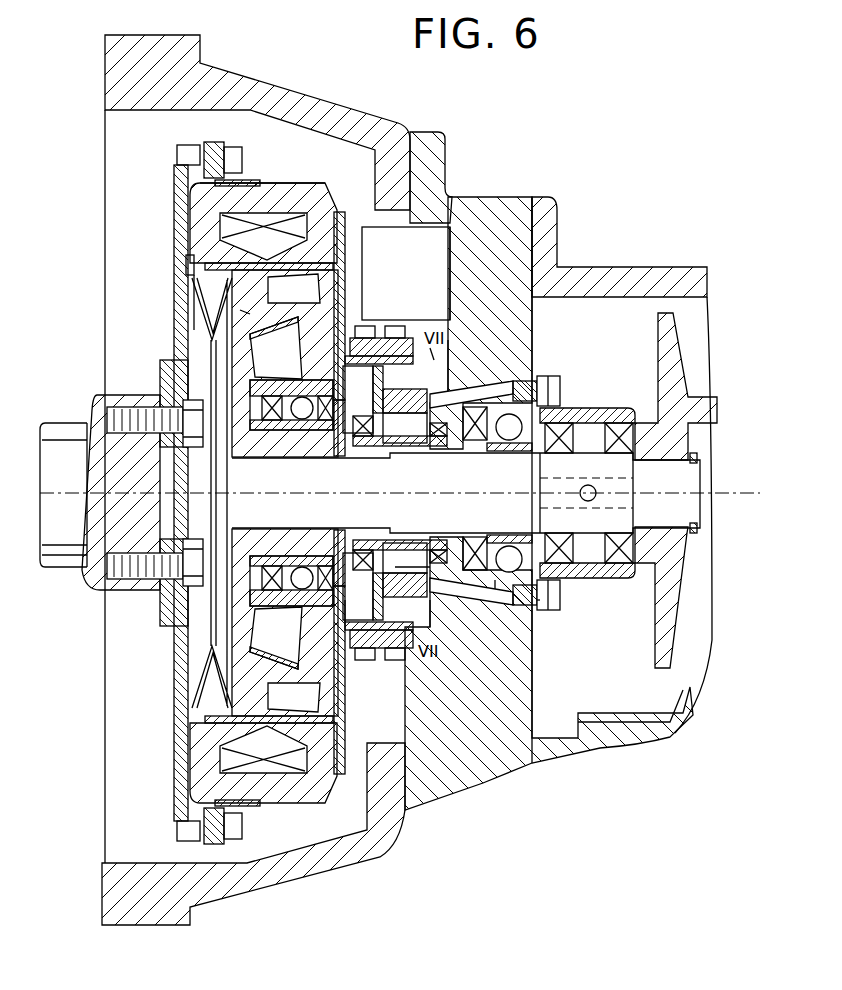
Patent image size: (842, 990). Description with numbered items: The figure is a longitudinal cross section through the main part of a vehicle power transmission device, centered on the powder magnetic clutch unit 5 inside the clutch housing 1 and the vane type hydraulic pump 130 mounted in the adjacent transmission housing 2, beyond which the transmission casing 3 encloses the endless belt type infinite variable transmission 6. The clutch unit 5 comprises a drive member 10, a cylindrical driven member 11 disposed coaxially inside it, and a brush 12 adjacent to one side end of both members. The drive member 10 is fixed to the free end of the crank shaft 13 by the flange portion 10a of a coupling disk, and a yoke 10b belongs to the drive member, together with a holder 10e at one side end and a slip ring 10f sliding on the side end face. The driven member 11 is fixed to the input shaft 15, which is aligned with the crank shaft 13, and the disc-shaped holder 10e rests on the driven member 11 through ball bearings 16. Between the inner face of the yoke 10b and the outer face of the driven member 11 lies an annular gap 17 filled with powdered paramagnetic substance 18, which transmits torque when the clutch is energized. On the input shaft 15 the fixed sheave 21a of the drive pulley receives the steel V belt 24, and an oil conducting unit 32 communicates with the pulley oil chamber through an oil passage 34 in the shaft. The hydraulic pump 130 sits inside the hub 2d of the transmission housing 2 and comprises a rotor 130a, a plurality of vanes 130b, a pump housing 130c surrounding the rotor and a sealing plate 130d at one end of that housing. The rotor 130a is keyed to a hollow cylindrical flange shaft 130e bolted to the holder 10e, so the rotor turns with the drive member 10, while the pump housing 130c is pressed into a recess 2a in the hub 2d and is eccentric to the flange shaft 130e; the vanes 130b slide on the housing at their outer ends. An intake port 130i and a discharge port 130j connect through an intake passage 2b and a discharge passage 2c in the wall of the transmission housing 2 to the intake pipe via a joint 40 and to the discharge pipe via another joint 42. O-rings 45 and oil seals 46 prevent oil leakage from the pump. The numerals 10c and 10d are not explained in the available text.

The clutch housing 1 is at (214, 86).
The transmission housing 2 is at (510, 207).
The recess 2a is at (408, 567).
The intake passage 2b is at (500, 597).
The discharge passage 2c is at (518, 365).
The hub 2d is at (393, 648).
The transmission casing 3 is at (664, 268).
The clutch unit 5 is at (276, 180).
The endless belt type infinite variable transmission 6 is at (697, 383).
The drive member 10 is at (296, 184).
The flange portion 10a is at (195, 172).
The yoke 10b is at (212, 210).
The clutch cover wall 10c is at (342, 212).
The diaphragm spring 10d is at (200, 322).
The holder 10e is at (345, 278).
The slip ring 10f is at (426, 325).
The driven member 11 is at (198, 287).
The brush 12 is at (432, 237).
The crank shaft 13 is at (76, 570).
The input shaft 15 is at (236, 490).
The ball bearings 16 is at (288, 595).
The annular gap 17 is at (190, 258).
The powdered paramagnetic substance 18 is at (252, 299).
The fixed sheave 21a is at (688, 560).
The steel V belt 24 is at (700, 638).
The oil conducting unit 32 is at (625, 430).
The oil passage 34 is at (705, 493).
The joint 40 is at (552, 610).
The joint 42 is at (560, 384).
The O-rings 45 is at (445, 595).
The oil seals 46 is at (352, 434).
The hydraulic pump 130 is at (432, 613).
The rotor 130a is at (397, 573).
The vanes 130b is at (410, 443).
The pump housing 130c is at (374, 338).
The sealing plate 130d is at (365, 585).
The flange shaft 130e is at (350, 447).
The intake port 130i is at (438, 590).
The discharge port 130j is at (435, 398).